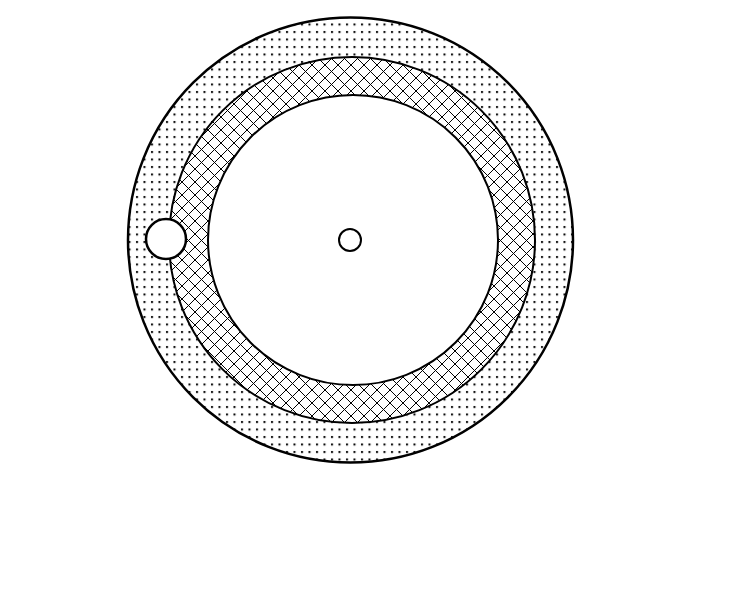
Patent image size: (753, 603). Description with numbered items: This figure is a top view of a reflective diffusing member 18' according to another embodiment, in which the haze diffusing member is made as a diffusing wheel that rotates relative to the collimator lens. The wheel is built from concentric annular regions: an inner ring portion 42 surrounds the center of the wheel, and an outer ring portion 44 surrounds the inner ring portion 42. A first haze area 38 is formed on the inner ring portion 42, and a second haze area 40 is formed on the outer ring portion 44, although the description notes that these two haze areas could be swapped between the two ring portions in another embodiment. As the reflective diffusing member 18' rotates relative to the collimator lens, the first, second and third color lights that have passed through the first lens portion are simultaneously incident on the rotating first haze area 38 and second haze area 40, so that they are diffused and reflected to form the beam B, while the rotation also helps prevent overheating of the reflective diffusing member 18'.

The reflective diffusing member 18' is at (337, 291).
The outer ring portion 44 is at (462, 48).
The second haze area 40 is at (544, 190).
The first haze area 38 is at (535, 230).
The inner ring portion 42 is at (491, 188).
The beam B is at (141, 237).